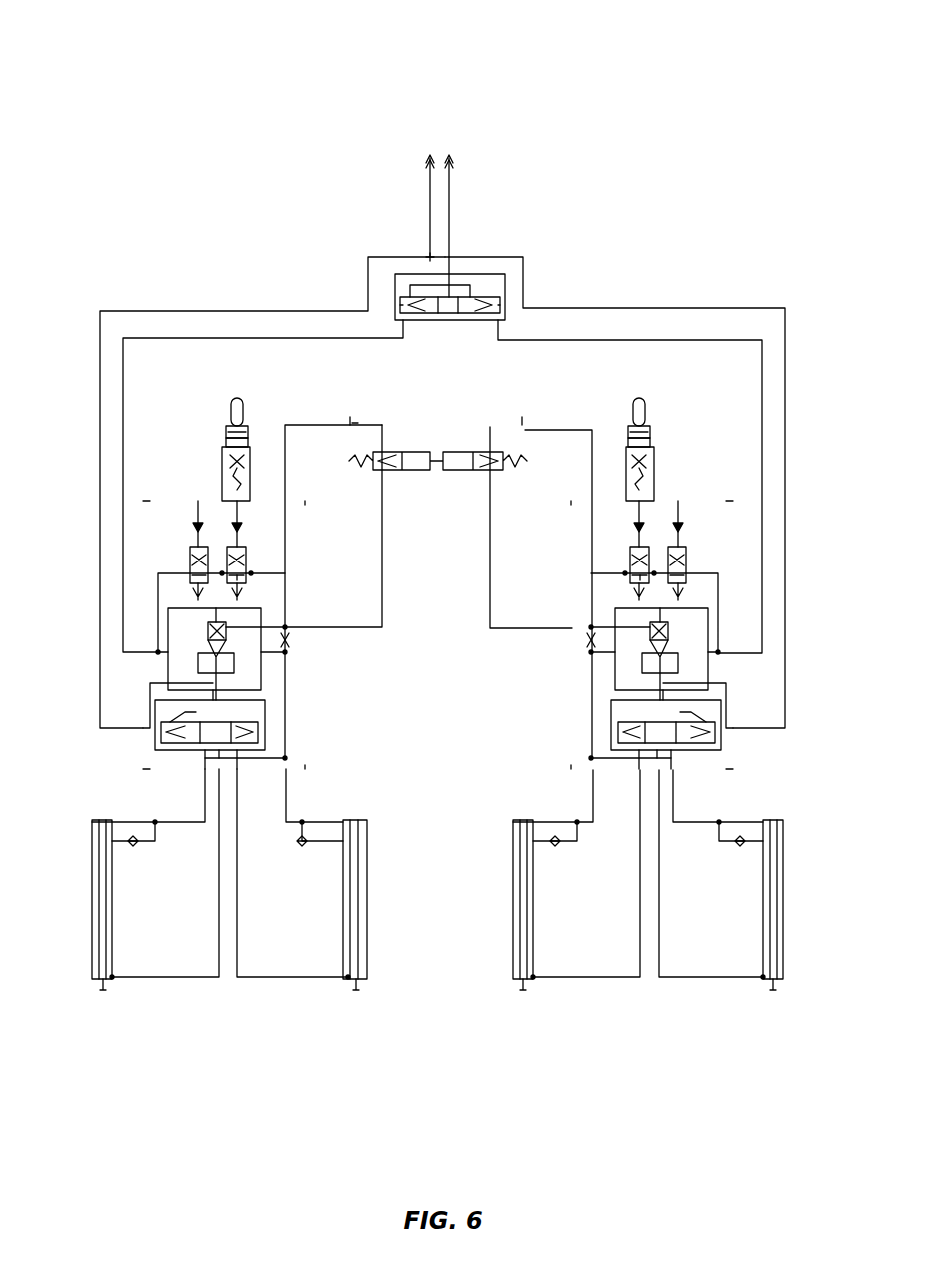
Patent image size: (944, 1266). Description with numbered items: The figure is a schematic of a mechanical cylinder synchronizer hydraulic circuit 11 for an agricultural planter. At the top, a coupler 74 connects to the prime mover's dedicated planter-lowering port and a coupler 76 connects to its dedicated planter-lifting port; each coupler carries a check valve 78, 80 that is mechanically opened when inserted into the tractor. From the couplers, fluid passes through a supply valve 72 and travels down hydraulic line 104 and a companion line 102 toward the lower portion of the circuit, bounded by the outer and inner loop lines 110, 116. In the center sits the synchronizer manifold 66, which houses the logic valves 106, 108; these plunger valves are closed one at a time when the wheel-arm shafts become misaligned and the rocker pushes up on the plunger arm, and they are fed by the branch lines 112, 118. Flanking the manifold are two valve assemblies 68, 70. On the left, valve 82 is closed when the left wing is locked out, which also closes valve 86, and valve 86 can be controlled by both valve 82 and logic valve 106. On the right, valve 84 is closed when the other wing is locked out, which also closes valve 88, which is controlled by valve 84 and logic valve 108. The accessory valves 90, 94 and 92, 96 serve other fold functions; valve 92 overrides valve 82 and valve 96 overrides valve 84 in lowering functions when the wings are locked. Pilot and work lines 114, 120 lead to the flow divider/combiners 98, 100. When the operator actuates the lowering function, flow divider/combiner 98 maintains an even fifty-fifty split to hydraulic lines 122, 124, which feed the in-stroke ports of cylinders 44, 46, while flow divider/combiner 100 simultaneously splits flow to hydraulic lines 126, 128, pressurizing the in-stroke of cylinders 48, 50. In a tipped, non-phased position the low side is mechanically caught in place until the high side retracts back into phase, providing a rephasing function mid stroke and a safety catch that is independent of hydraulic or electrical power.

The mechanical cylinder synchronizer hydraulic circuit 11 is at (460, 77).
The cylinder 44 is at (105, 890).
The cylinder 46 is at (362, 930).
The cylinder 48 is at (518, 963).
The cylinder 50 is at (778, 930).
The manifold 66 is at (415, 402).
The first valve assembly 68 is at (203, 490).
The second valve assembly 70 is at (676, 485).
The supply valve 72 is at (477, 274).
The coupler 74 is at (432, 160).
The coupler 76 is at (449, 160).
The check valve 78 is at (428, 165).
The check valve 80 is at (452, 165).
The valve 82 is at (232, 418).
The valve 84 is at (645, 418).
The valve 86 is at (217, 622).
The valve 88 is at (665, 627).
The valve 90 is at (195, 543).
The valve 92 is at (242, 582).
The check valve pair 94 is at (685, 545).
The valve 96 is at (632, 587).
The flow divider/combiner 98 is at (155, 742).
The flow divider/combiner 100 is at (718, 748).
The supply line 102 is at (449, 213).
The hydraulic line 104 is at (430, 213).
The logic valve 106 is at (402, 462).
The logic valve 108 is at (463, 462).
The hydraulic line 110 is at (285, 339).
The hydraulic line 112 is at (338, 424).
The hydraulic line 114 is at (380, 545).
The hydraulic line 116 is at (620, 340).
The hydraulic line 118 is at (565, 430).
The hydraulic line 120 is at (490, 545).
The hydraulic line 122 is at (219, 965).
The hydraulic line 124 is at (237, 925).
The hydraulic line 126 is at (640, 965).
The hydraulic line 128 is at (659, 925).